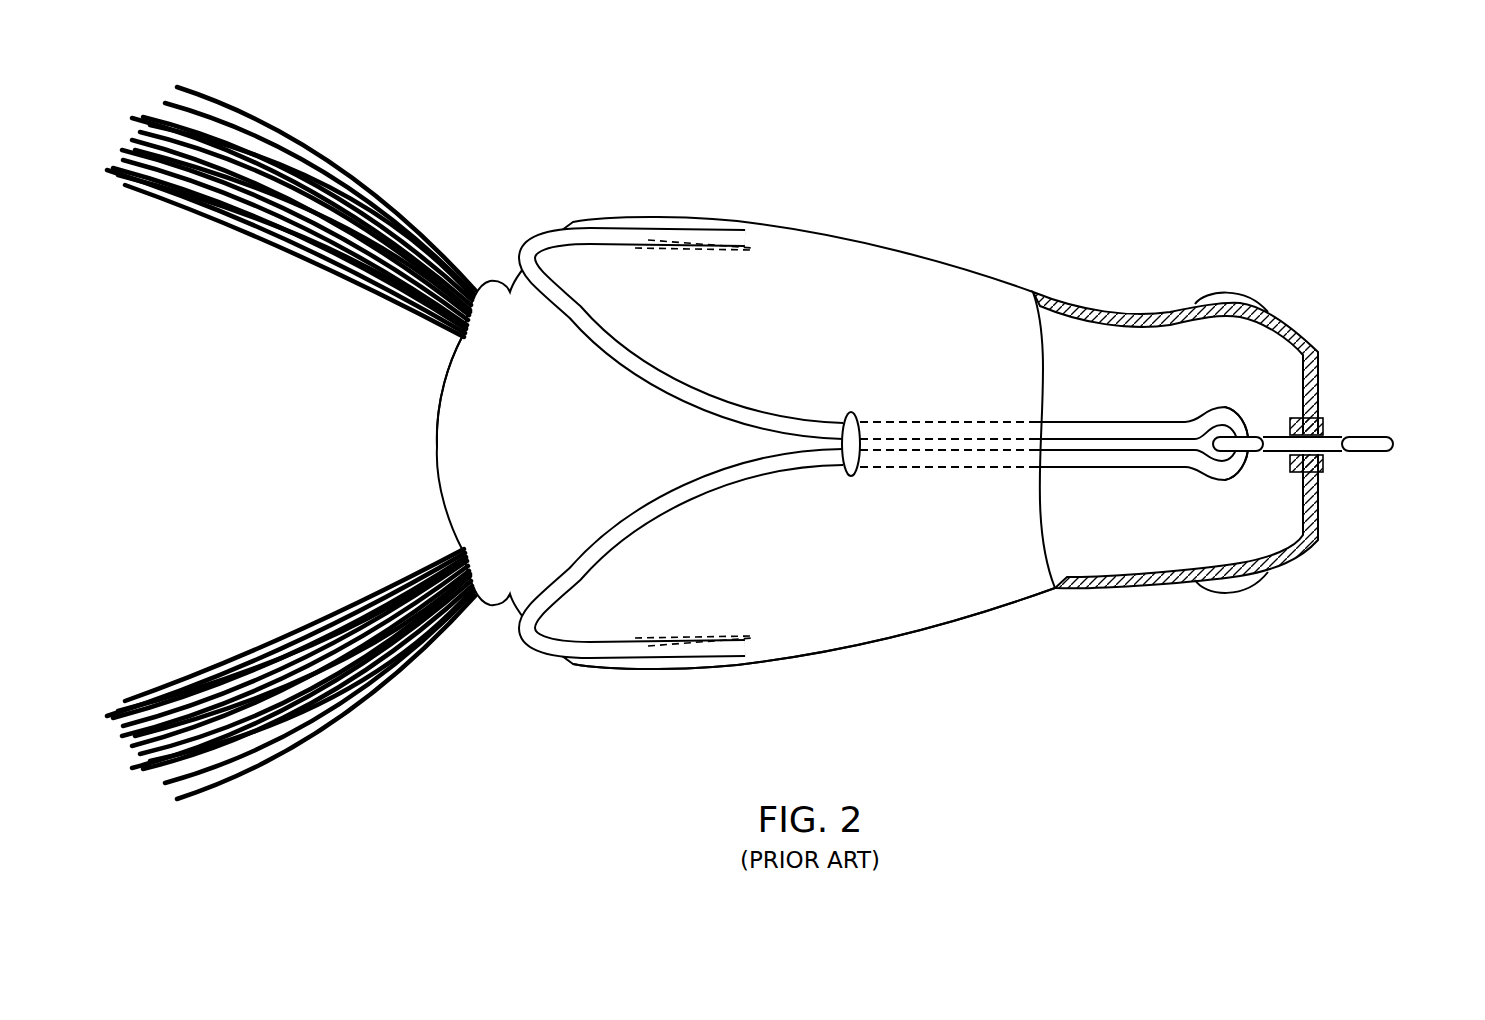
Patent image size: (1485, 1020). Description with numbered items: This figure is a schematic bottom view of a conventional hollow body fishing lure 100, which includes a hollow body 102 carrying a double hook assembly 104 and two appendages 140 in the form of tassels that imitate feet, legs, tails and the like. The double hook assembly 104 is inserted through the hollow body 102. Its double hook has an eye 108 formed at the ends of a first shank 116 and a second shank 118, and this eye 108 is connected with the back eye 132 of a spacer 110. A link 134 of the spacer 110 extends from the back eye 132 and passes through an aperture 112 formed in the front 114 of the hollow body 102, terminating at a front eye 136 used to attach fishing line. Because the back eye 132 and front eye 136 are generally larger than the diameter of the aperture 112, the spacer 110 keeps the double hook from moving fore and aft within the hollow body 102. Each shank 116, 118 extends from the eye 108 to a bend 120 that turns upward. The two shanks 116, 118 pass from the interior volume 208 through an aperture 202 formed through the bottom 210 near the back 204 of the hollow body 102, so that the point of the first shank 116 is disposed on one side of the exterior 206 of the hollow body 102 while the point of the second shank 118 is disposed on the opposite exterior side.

The hollow body fishing lure 100 is at (952, 117).
The hollow body 102 is at (1067, 294).
The double hook assembly 104 is at (855, 443).
The eye 108 is at (1228, 410).
The spacer 110 is at (1338, 377).
The aperture 112 is at (1308, 428).
The front 114 is at (1320, 520).
The first shank 116 is at (722, 488).
The second shank 118 is at (724, 402).
The bend 120 is at (520, 252).
The back eye 132 is at (1255, 446).
The link 134 is at (1277, 447).
The front eye 136 is at (1378, 450).
The appendages 140 is at (280, 294).
The aperture 202 is at (852, 413).
The back 204 is at (437, 427).
The exterior 206 is at (845, 232).
The interior volume 208 is at (1088, 345).
The bottom 210 is at (838, 588).